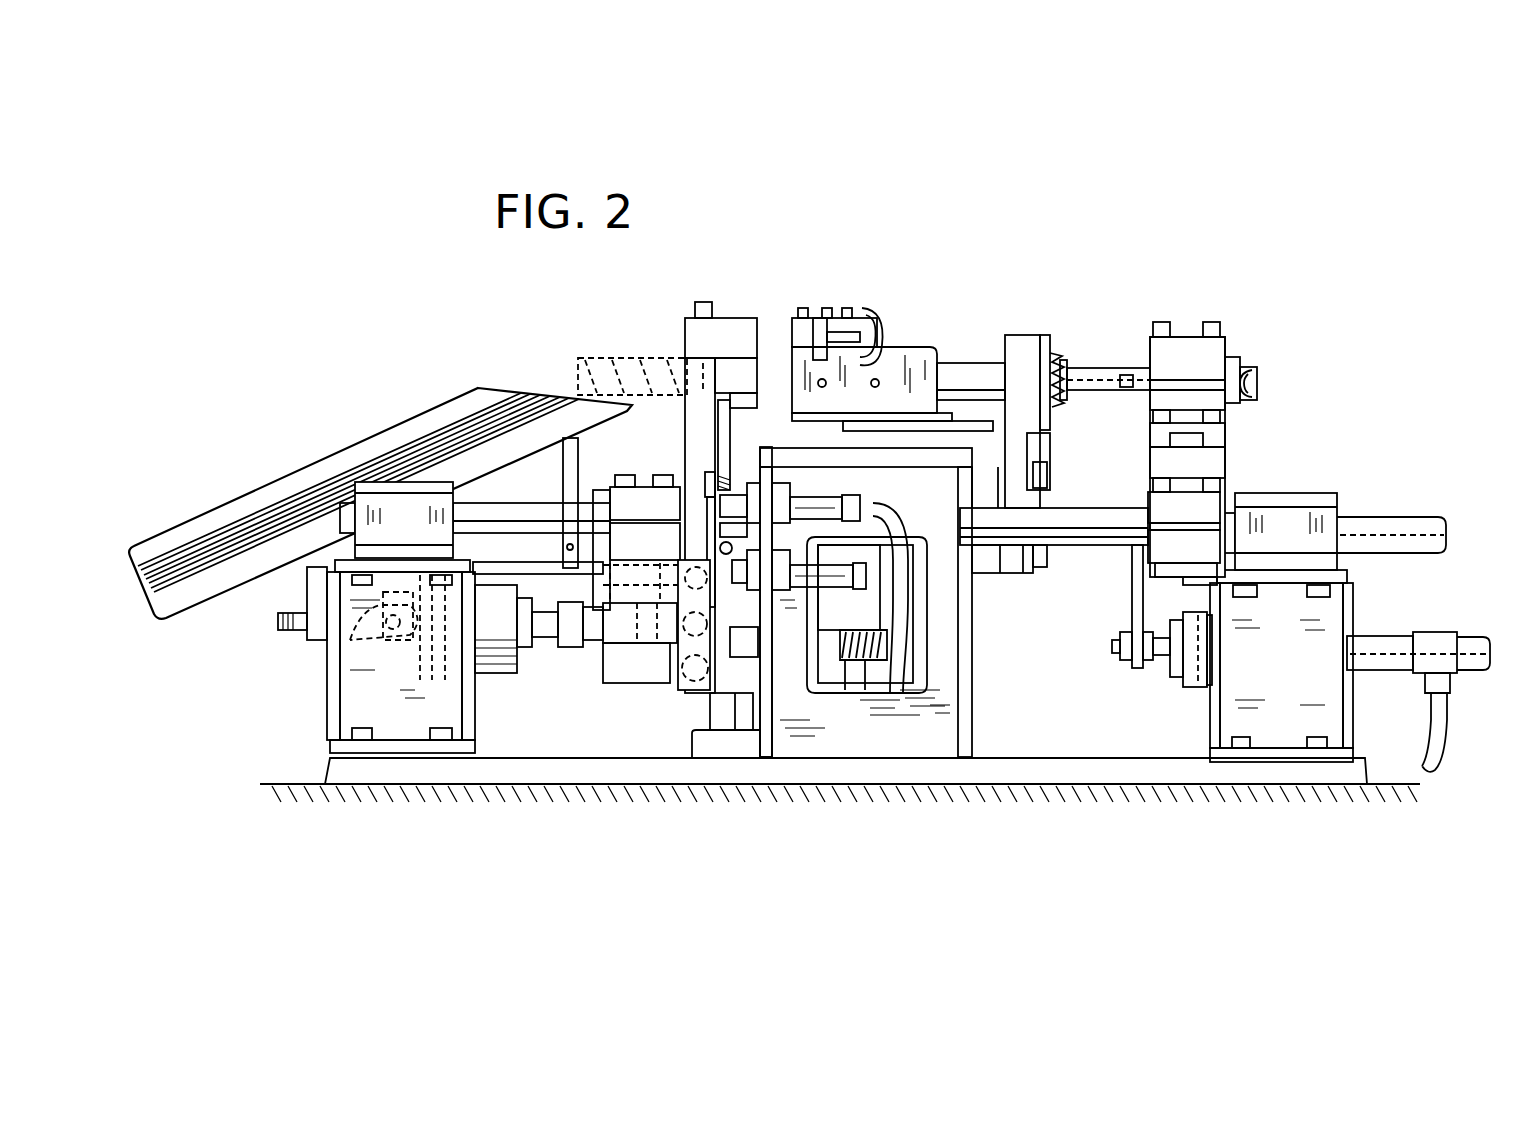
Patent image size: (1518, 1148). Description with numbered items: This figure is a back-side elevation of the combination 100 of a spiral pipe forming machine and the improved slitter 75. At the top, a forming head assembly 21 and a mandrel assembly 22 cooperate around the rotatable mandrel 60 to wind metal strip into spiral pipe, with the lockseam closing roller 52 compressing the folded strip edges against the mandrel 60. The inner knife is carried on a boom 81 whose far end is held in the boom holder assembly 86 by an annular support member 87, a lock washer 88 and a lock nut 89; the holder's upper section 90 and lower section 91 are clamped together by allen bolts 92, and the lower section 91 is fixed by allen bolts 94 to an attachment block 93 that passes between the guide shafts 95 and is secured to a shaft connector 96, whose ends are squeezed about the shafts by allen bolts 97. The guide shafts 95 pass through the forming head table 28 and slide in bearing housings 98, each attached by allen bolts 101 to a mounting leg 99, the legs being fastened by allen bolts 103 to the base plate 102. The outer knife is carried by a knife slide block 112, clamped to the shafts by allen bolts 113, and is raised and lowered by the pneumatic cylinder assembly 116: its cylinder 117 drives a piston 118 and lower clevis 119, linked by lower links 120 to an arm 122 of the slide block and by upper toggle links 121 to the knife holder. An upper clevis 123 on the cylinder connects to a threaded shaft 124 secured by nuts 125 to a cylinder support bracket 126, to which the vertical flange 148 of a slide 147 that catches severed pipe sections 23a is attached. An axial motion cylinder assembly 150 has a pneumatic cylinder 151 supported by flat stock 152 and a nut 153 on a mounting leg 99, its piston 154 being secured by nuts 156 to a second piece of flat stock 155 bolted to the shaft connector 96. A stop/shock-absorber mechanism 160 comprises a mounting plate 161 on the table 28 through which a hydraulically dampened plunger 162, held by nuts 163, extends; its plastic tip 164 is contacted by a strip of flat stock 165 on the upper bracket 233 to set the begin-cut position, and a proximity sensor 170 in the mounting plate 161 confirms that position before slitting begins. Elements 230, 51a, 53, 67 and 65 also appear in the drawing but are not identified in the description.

The combination 100 is at (1107, 258).
The slitter 75 is at (545, 350).
The slide 147 is at (265, 493).
The guide shafts 95 is at (487, 510).
The pipe sections 23a is at (575, 376).
The vertical flange 148 is at (563, 488).
The bearing housings 98 is at (420, 534).
The cylinder support bracket 126 is at (530, 562).
The nuts 125 is at (343, 650).
The threaded shaft 124 is at (320, 660).
The upper clevis 123 is at (403, 630).
The mounting legs 99 is at (420, 717).
The allen bolts 101 is at (1315, 600).
The allen bolts 103 is at (1312, 737).
The pneumatic cylinder 117 is at (484, 648).
The piston 118 is at (540, 640).
The lower clevis 119 is at (575, 648).
The lower links 120 is at (680, 700).
The pneumatic cylinder assembly 116 is at (512, 690).
The plastic tip 164 is at (728, 575).
The forming head table 28 is at (907, 705).
The base plate 102 is at (1100, 770).
The nut 153 is at (1175, 690).
The flat stock 152 is at (1195, 688).
The knife slide block 112 is at (664, 554).
The upper toggle links 121 is at (640, 572).
The arm 122 is at (660, 676).
The allen bolts 113 is at (628, 475).
The strip of flat stock 165 is at (697, 478).
The upper bracket 233 is at (737, 306).
The bracket 230 is at (750, 368).
The key 51a is at (822, 308).
The pin 53 is at (845, 320).
The lockseam closing roller 52 is at (870, 320).
The forming head assembly 21 is at (922, 342).
The mandrel assembly 22 is at (1026, 320).
The mandrel 60 is at (973, 368).
The gear 67 is at (1052, 352).
The boom 81 is at (1110, 368).
The boom holder assembly 86 is at (1190, 320).
The allen bolts 92 is at (1232, 320).
The upper section 90 is at (1228, 342).
The annular support member 87 is at (1242, 363).
The lock washer 88 is at (1260, 375).
The lock nut 89 is at (1253, 398).
The allen bolts 94 is at (1228, 410).
The lower section 91 is at (1228, 437).
The attachment block 93 is at (1228, 467).
The allen bolts 97 is at (1158, 480).
The bracket 65 is at (1040, 460).
The shaft connector 96 is at (1200, 520).
The axial motion cylinder assembly 150 is at (1388, 625).
The pneumatic cylinder 151 is at (1478, 675).
The second piece of flat stock 155 is at (1132, 602).
The nuts 156 is at (1125, 660).
The piston 154 is at (1150, 662).
The stop/shock-absorber mechanism 160 is at (870, 595).
The plunger 162 is at (850, 575).
The nuts 163 is at (770, 598).
The mounting plate 161 is at (778, 474).
The proximity sensor 170 is at (848, 483).